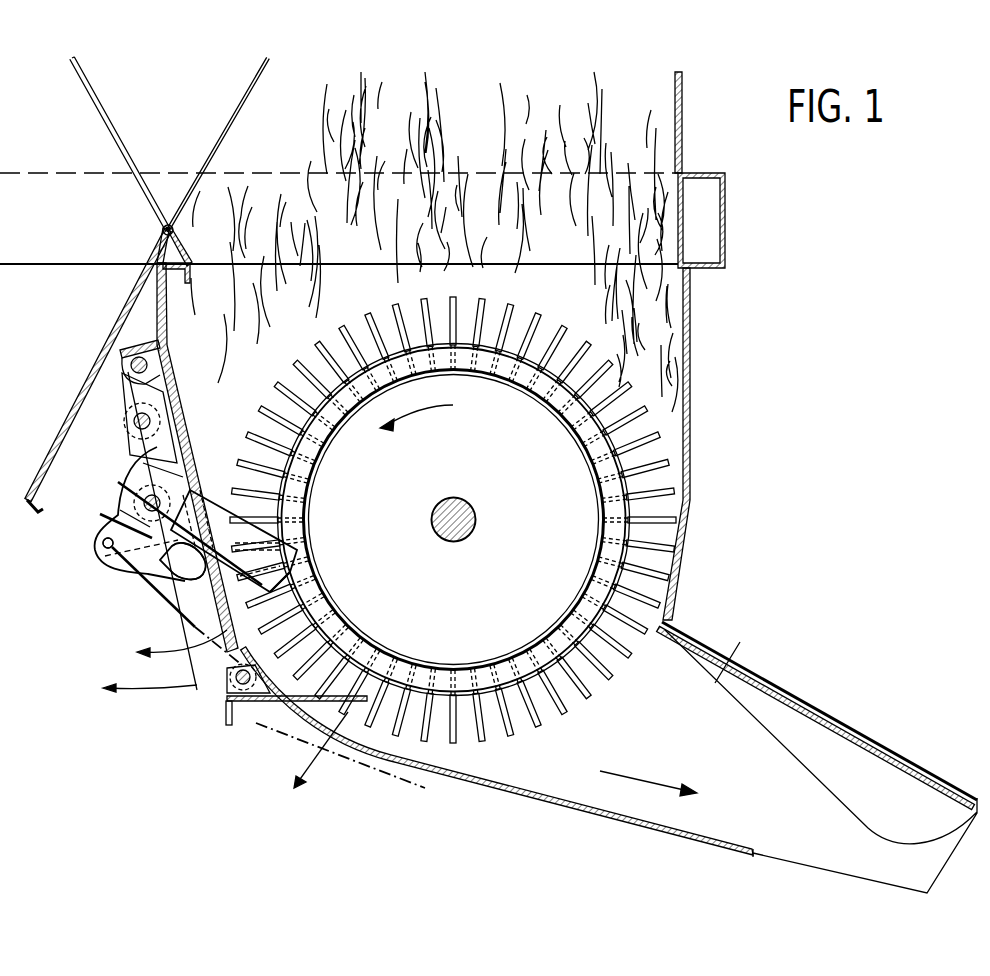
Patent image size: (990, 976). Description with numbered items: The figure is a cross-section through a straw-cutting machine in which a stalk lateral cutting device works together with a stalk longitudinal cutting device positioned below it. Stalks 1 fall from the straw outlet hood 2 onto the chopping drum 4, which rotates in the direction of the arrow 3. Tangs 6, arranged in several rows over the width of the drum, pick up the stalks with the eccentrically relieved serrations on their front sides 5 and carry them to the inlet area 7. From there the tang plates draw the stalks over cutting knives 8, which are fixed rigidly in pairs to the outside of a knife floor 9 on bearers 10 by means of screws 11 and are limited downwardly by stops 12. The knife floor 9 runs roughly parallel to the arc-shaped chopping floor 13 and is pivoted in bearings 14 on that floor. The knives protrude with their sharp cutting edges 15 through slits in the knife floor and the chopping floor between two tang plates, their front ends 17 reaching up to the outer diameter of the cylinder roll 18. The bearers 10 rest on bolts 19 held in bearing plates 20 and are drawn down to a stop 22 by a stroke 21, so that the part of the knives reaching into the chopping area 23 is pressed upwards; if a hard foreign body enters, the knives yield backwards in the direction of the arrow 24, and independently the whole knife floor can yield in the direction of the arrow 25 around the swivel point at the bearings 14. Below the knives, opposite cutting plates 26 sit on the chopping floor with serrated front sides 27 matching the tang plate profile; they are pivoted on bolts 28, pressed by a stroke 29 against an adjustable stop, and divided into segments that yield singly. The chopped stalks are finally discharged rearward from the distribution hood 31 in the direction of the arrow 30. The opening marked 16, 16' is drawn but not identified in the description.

The stalks 1 is at (622, 100).
The straw outlet hood 2 is at (681, 125).
The arrow 3 is at (432, 406).
The chopping drum 4 is at (540, 512).
The front sides 5 is at (338, 350).
The tangs 6 is at (288, 396).
The inlet area 7 is at (205, 350).
The cutting knives 8 is at (110, 520).
The knife floor 9 is at (130, 362).
The bearers 10 is at (138, 458).
The screws 11 is at (145, 500).
The stops 12 is at (188, 561).
The chopping floor 13 is at (157, 303).
The bearings 14 is at (120, 342).
The cutting edges 15 is at (297, 548).
The opening 16 is at (71, 556).
The opening 16' is at (108, 543).
The front ends 17 is at (287, 575).
The cylinder roll 18 is at (570, 703).
The bolts 19 is at (137, 420).
The bearing plates 20 is at (177, 463).
The stroke 21 is at (155, 596).
The stop 22 is at (152, 578).
The chopping area 23 is at (227, 460).
The arrow 24 is at (176, 634).
The arrow 25 is at (160, 690).
The opposite cutting plates 26 is at (272, 703).
The front sides 27 is at (380, 680).
The bolts 28 is at (228, 710).
The stroke 29 is at (372, 778).
The arrow 30 is at (633, 770).
The distribution hood 31 is at (663, 805).